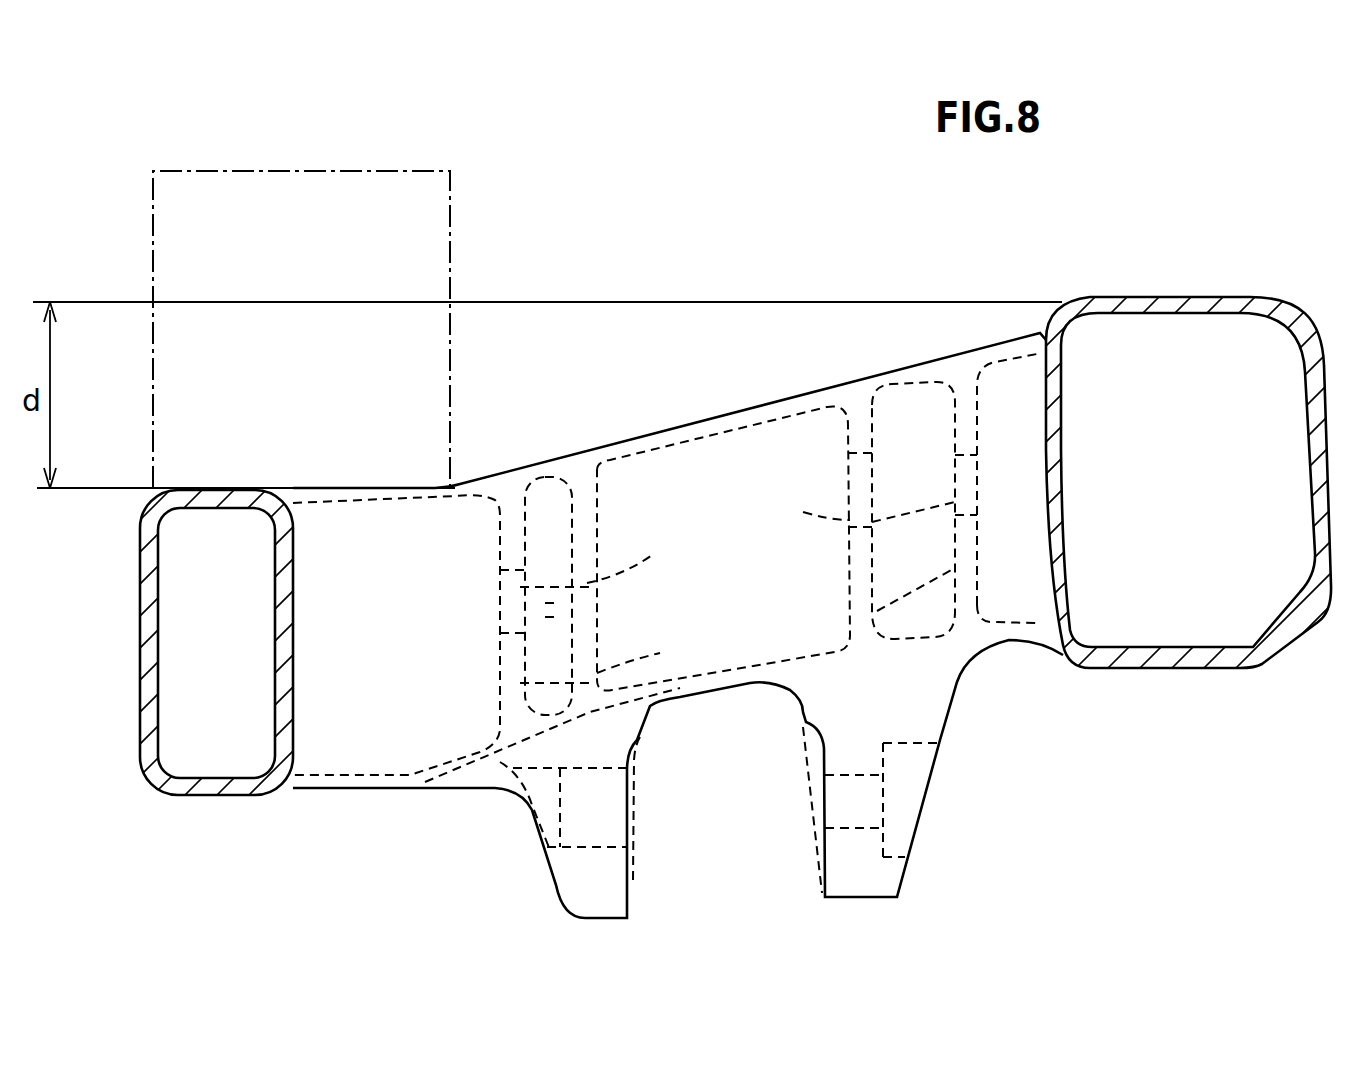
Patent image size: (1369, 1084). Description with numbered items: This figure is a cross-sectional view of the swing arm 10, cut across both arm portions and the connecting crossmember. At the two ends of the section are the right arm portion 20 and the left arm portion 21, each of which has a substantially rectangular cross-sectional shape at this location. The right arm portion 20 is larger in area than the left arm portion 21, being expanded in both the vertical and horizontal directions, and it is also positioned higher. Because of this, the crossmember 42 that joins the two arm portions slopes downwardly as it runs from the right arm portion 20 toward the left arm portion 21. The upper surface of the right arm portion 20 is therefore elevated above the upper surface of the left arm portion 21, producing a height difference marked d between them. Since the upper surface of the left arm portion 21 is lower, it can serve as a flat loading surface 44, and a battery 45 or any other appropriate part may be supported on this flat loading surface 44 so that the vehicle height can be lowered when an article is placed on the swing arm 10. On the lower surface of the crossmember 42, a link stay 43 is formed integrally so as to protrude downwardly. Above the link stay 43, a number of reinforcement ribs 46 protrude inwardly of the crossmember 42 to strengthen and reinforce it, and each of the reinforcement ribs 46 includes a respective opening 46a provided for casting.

The swing arm 10 is at (732, 285).
The right arm portion 20 is at (1193, 297).
The left arm portion 21 is at (138, 643).
The crossmember 42 is at (725, 413).
The link stay 43 is at (563, 883).
The flat loading surface 44 is at (370, 488).
The battery 45 is at (410, 230).
The reinforcement ribs 46 is at (583, 630).
The opening 46a is at (585, 605).